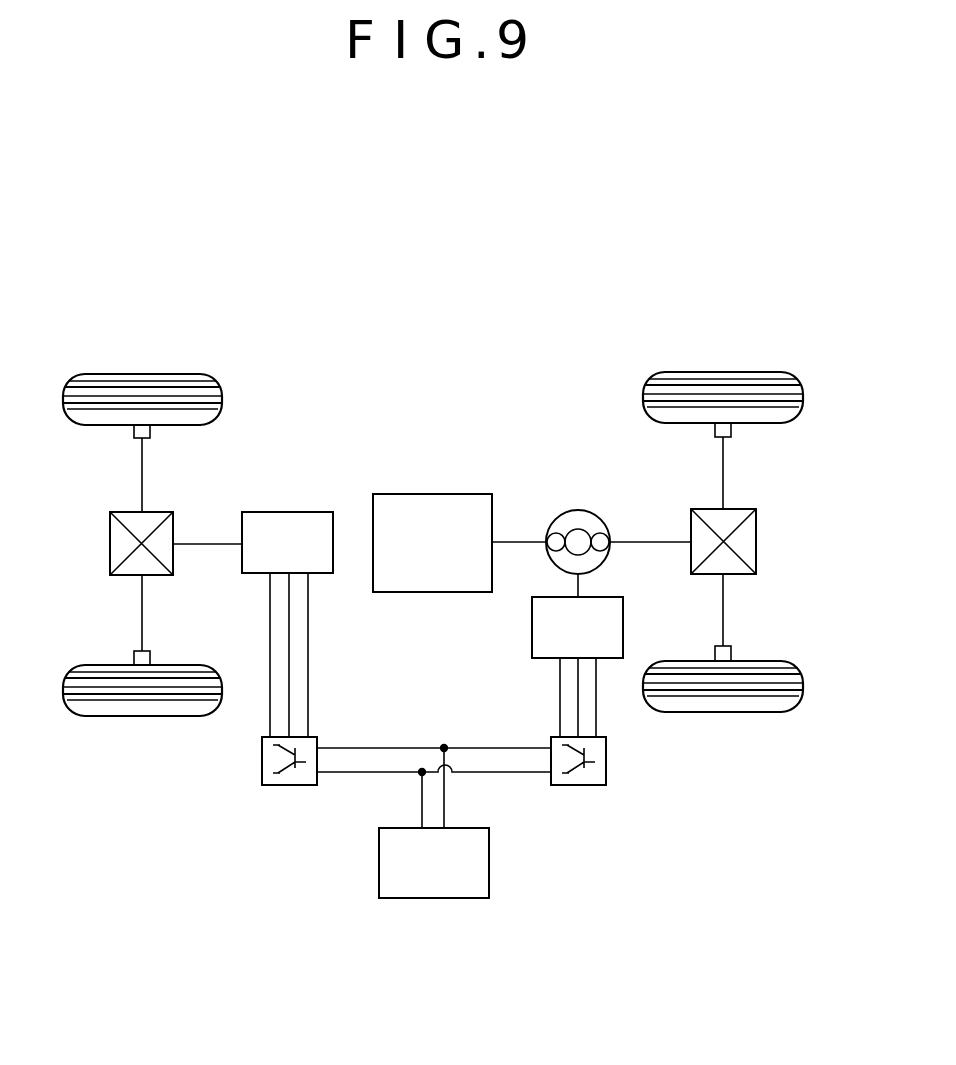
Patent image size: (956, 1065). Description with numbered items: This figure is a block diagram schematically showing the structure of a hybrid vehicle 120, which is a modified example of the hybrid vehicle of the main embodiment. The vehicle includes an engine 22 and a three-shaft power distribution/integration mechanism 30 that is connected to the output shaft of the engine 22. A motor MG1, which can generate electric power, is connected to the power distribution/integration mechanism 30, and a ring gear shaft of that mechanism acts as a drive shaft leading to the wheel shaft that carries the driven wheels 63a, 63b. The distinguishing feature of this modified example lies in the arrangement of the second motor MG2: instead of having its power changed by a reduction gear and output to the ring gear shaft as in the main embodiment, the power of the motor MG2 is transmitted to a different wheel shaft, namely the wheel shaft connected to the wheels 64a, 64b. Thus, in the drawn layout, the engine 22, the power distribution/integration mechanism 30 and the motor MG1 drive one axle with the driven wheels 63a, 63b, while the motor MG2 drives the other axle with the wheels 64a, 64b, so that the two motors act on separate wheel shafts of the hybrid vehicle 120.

The hybrid vehicle 120 is at (426, 368).
The engine 22 is at (432, 494).
The power distribution/integration mechanism 30 is at (578, 510).
The motor MG1 is at (532, 627).
The motor MG2 is at (288, 512).
The driven wheel 63a is at (723, 372).
The driven wheel 63b is at (725, 712).
The wheel 64a is at (140, 374).
The wheel 64b is at (145, 716).